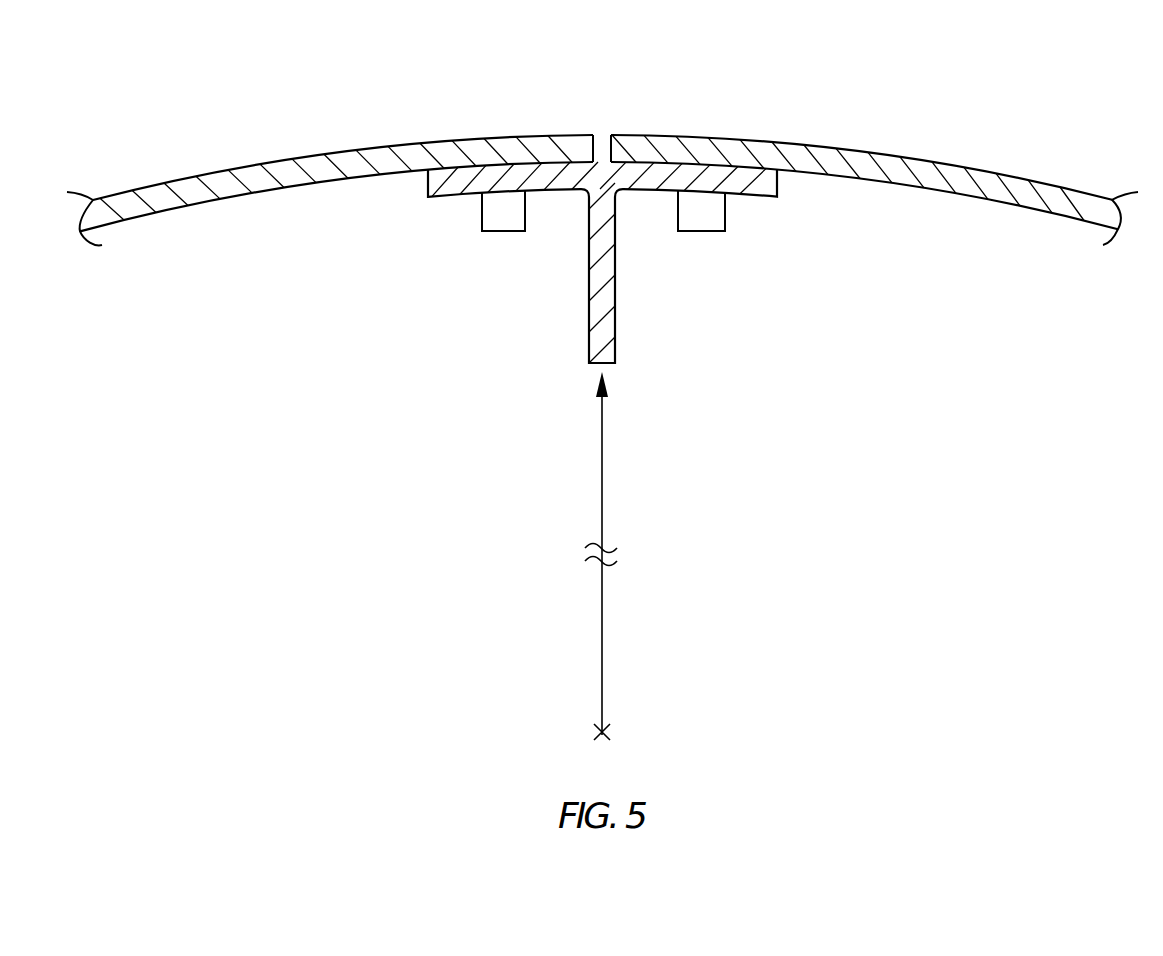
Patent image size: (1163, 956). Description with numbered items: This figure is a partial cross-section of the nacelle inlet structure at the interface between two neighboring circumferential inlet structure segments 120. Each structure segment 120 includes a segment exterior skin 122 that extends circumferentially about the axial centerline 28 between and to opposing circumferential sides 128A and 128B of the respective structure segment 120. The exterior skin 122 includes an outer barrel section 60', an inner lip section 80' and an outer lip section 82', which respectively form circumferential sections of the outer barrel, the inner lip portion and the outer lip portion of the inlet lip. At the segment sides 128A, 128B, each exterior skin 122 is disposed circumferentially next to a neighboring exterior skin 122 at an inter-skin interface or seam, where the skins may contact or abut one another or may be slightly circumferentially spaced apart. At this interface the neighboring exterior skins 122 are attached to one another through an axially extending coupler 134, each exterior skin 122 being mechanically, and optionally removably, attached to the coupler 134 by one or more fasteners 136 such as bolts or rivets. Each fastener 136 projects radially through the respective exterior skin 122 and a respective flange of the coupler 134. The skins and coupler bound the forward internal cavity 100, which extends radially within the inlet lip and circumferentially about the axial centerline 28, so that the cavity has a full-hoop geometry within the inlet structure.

The forward internal cavity 100 is at (602, 248).
The circumferential inlet structure segment 120 is at (602, 165).
The outer barrel section 60' is at (602, 165).
The inner lip section 80' is at (602, 165).
The outer lip section 82' is at (602, 165).
The segment exterior skin 122 is at (275, 180).
The circumferential side 128A is at (593, 135).
The circumferential side 128B is at (611, 135).
The coupler 134 is at (617, 335).
The fastener 136 is at (505, 231).
The axial centerline 28 is at (608, 730).